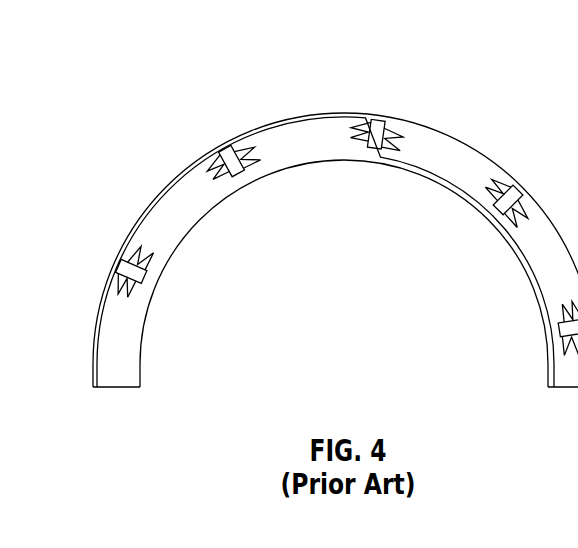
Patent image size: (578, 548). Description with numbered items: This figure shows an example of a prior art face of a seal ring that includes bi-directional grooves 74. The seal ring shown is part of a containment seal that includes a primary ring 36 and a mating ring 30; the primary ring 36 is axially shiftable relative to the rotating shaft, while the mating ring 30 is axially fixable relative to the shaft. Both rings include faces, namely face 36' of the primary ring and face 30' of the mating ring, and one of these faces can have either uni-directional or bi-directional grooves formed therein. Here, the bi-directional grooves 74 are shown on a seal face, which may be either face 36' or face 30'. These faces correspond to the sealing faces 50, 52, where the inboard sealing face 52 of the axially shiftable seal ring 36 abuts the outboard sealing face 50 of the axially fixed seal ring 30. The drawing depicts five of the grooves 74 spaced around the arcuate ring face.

The mating ring 30 is at (323, 211).
The primary ring 36 is at (335, 250).
The face 30' is at (325, 252).
The face 36' is at (325, 252).
The outboard sealing face 50 is at (325, 252).
The inboard sealing face 52 is at (186, 222).
The bi-directional grooves 74 is at (228, 150).